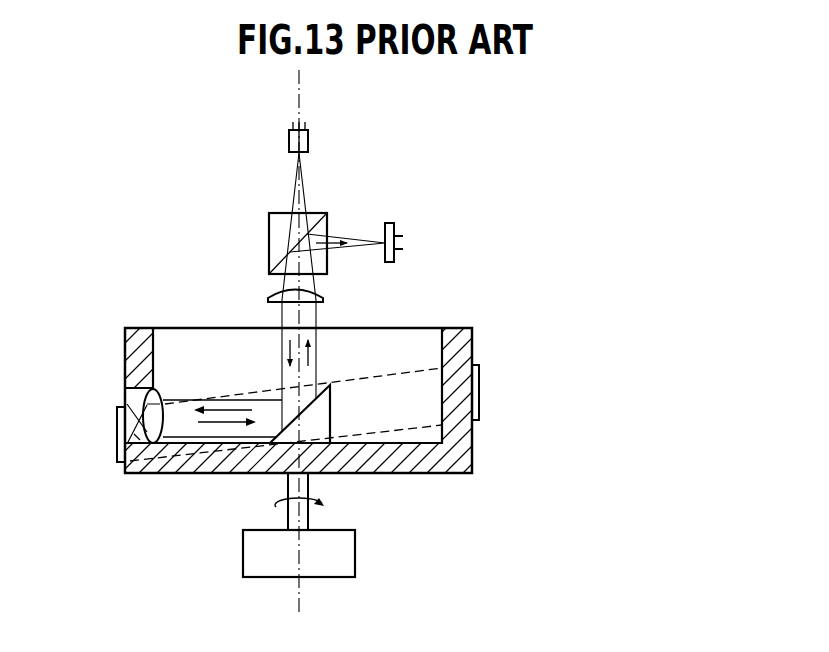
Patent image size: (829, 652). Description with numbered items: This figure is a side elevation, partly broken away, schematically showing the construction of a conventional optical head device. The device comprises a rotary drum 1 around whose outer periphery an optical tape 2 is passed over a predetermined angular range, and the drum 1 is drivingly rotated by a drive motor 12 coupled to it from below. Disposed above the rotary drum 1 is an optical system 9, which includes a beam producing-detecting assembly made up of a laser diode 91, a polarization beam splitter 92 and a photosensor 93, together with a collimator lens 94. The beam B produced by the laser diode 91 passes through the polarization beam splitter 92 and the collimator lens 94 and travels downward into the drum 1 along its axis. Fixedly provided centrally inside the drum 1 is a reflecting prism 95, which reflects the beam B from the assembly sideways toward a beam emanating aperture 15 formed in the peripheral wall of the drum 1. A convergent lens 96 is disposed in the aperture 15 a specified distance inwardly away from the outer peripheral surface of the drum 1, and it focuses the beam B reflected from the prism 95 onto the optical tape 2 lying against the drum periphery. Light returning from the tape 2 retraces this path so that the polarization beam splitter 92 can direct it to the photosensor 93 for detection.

The rotary drum 1 is at (468, 454).
The optical tape 2 is at (118, 437).
The optical system 9 is at (440, 271).
The drive motor 12 is at (333, 558).
The beam emanating aperture 15 is at (137, 438).
The laser diode 91 is at (289, 138).
The polarization beam splitter 92 is at (319, 212).
The photosensor 93 is at (391, 222).
The collimator lens 94 is at (306, 298).
The reflecting prism 95 is at (331, 410).
The convergent lens 96 is at (126, 398).
The light beam B is at (248, 400).